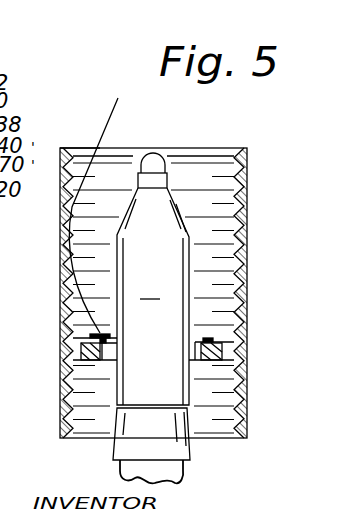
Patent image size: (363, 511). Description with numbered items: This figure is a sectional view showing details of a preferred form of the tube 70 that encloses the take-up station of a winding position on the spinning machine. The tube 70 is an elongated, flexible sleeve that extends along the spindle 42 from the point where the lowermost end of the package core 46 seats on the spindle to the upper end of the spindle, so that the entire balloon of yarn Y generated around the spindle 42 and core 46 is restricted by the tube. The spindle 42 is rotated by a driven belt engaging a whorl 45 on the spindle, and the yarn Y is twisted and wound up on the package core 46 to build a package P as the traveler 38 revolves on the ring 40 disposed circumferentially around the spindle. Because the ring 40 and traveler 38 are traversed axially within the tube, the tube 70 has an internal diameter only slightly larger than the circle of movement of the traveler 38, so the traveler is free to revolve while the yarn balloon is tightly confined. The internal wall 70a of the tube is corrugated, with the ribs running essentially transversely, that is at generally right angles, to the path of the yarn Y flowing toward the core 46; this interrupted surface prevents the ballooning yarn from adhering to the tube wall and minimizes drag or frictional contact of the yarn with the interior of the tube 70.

The tube 70 is at (249, 218).
The internal wall 70a is at (83, 134).
The yarn Y is at (114, 107).
The package P is at (153, 296).
The spindle 42 is at (151, 152).
The package core 46 is at (166, 182).
The traveler 38 is at (73, 336).
The ring 40 is at (78, 352).
The whorl 45 is at (180, 453).